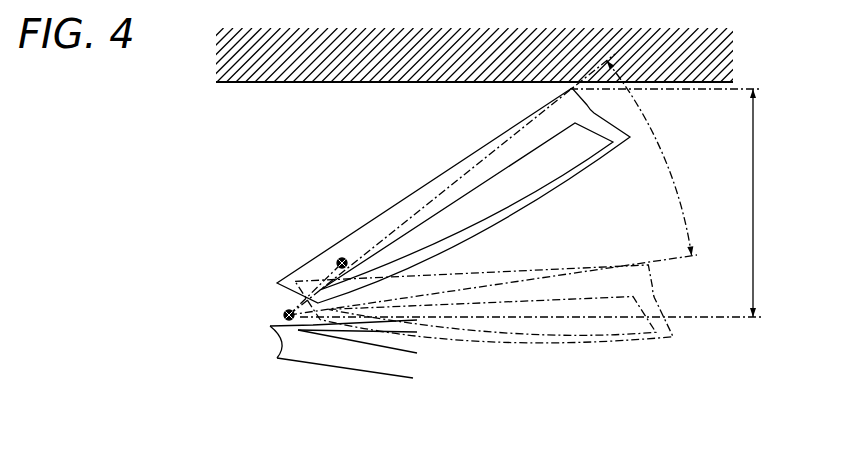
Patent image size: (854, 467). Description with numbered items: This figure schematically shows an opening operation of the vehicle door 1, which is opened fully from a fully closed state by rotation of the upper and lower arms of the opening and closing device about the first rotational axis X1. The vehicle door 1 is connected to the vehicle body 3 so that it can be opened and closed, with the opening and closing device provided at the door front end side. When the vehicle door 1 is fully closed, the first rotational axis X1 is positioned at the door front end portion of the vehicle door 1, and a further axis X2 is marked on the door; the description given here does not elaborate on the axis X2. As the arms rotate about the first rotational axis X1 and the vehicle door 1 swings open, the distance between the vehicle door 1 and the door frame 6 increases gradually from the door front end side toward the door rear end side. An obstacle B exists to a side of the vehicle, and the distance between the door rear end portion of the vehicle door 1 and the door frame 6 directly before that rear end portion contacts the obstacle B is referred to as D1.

The vehicle door 1 is at (404, 195).
The vehicle body 3 is at (343, 387).
The door frame 6 is at (395, 363).
The first rotational axis X1 is at (284, 315).
The reference point on blade X2 is at (337, 260).
The obstacle B is at (727, 53).
The distance D1 is at (544, 203).